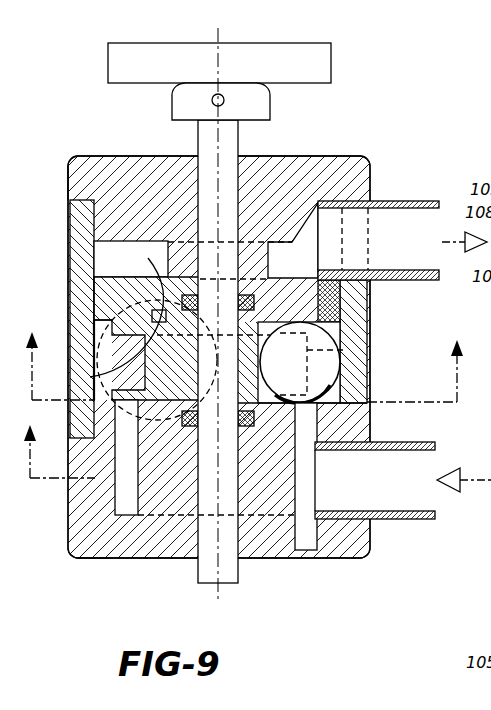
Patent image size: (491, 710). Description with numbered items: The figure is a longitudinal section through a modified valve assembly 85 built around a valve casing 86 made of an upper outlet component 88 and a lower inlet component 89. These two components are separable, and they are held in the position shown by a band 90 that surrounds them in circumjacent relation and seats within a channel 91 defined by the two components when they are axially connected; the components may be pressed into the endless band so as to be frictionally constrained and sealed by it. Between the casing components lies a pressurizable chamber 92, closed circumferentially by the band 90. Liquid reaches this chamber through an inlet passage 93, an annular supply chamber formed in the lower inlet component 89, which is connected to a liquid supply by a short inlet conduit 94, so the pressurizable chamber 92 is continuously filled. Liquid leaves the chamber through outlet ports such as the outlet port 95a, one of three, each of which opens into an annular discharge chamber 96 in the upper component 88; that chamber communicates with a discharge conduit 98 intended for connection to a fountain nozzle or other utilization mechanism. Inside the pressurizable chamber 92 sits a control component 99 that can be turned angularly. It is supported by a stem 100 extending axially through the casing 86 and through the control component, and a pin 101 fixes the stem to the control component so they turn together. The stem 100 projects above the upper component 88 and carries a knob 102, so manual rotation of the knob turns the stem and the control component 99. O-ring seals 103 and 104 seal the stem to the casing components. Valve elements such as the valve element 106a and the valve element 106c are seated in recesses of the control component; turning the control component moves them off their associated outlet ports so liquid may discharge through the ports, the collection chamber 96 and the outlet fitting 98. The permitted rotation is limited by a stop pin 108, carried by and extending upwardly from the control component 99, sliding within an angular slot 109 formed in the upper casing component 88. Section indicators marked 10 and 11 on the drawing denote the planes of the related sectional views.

The valve assembly 85 is at (70, 145).
The valve casing 86 is at (128, 152).
The upper outlet component 88 is at (72, 175).
The lower inlet component 89 is at (85, 548).
The band 90 is at (72, 234).
The channel 91 is at (93, 288).
The pressurizable chamber 92 is at (95, 322).
The inlet passage 93 is at (300, 556).
The inlet conduit 94 is at (402, 518).
The outlet port 95a is at (307, 308).
The annular discharge chamber 96 is at (282, 242).
The discharge conduit 98 is at (377, 204).
The control component 99 is at (345, 348).
The stem 100 is at (197, 568).
The pin 101 is at (222, 362).
The knob 102 is at (258, 44).
The O-ring seal 103 is at (183, 296).
The O-ring seal 104 is at (190, 428).
The valve element 106a is at (332, 388).
The valve element 106c is at (147, 338).
The stop pin 108 is at (92, 375).
The angular slot 109 is at (131, 260).
The section line 10 is at (57, 442).
The section line 11 is at (243, 356).